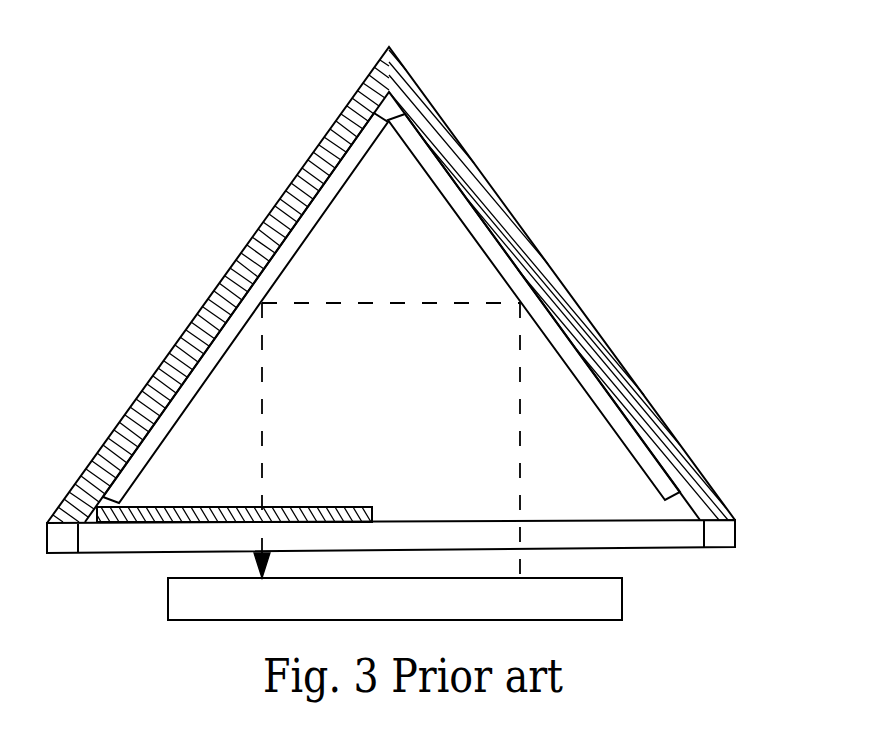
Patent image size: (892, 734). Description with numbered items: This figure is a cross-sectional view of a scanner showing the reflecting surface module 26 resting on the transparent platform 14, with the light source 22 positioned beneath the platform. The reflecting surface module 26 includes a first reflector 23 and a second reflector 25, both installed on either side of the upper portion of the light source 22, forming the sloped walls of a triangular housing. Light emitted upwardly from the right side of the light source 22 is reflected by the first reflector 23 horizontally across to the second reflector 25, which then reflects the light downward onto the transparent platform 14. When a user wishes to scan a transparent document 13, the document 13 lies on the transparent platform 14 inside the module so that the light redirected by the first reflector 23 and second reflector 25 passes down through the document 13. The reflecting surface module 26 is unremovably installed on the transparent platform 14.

The transparent document 13 is at (343, 503).
The transparent platform 14 is at (672, 535).
The light source 22 is at (603, 606).
The first reflector 23 is at (635, 438).
The second reflector 25 is at (140, 455).
The reflecting surface module 26 is at (570, 307).